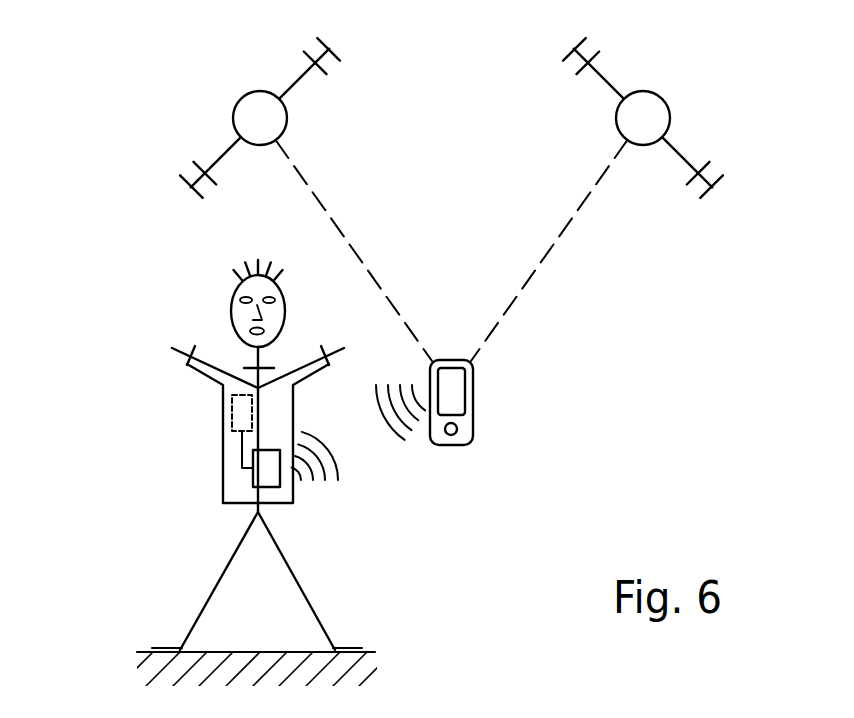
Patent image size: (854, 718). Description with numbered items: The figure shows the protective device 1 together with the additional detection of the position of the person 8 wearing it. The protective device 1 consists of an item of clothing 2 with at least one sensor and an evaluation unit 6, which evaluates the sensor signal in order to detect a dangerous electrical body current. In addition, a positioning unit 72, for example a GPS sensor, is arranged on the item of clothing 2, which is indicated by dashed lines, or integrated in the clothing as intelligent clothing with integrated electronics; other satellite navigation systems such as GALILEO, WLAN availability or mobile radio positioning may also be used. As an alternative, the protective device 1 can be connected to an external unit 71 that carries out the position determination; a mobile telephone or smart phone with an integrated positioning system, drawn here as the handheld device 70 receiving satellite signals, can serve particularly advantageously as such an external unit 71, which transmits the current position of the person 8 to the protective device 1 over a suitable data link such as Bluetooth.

The protective device 1 is at (185, 393).
The item of clothing 2 is at (192, 348).
The person 8 is at (206, 280).
The evaluation unit 6 is at (252, 478).
The positioning unit 72 is at (230, 415).
The mobile terminal 70 is at (465, 445).
The external unit 71 is at (359, 447).